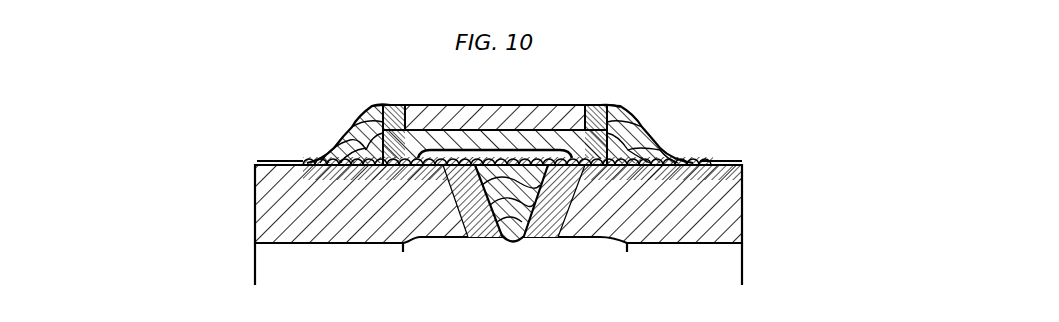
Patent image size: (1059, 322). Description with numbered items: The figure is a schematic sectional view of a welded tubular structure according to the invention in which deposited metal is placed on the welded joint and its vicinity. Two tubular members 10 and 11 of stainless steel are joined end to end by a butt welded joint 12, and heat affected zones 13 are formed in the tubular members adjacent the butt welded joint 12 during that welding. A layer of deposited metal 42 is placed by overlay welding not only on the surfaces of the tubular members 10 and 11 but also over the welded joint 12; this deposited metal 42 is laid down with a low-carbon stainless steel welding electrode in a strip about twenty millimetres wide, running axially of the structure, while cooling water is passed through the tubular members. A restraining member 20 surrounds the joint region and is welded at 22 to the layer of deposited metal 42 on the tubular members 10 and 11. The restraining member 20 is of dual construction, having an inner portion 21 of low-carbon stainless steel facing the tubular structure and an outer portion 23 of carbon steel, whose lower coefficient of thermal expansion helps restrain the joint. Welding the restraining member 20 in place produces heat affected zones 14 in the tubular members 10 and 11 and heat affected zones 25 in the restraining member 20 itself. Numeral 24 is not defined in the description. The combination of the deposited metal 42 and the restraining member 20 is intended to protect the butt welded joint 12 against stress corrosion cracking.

The tubular member 10 is at (323, 235).
The tubular member 11 is at (684, 235).
The butt welded joint 12 is at (512, 244).
The heat affected zones 13 is at (478, 235).
The heat affected zones 14 is at (287, 165).
The restraining member 20 is at (515, 105).
The inner portion 21 is at (437, 137).
The weld 22 is at (342, 127).
The outer portion 23 is at (467, 117).
The contact pads 24 is at (403, 117).
The heat affected zones 25 is at (390, 103).
The deposited metal 42 is at (305, 159).